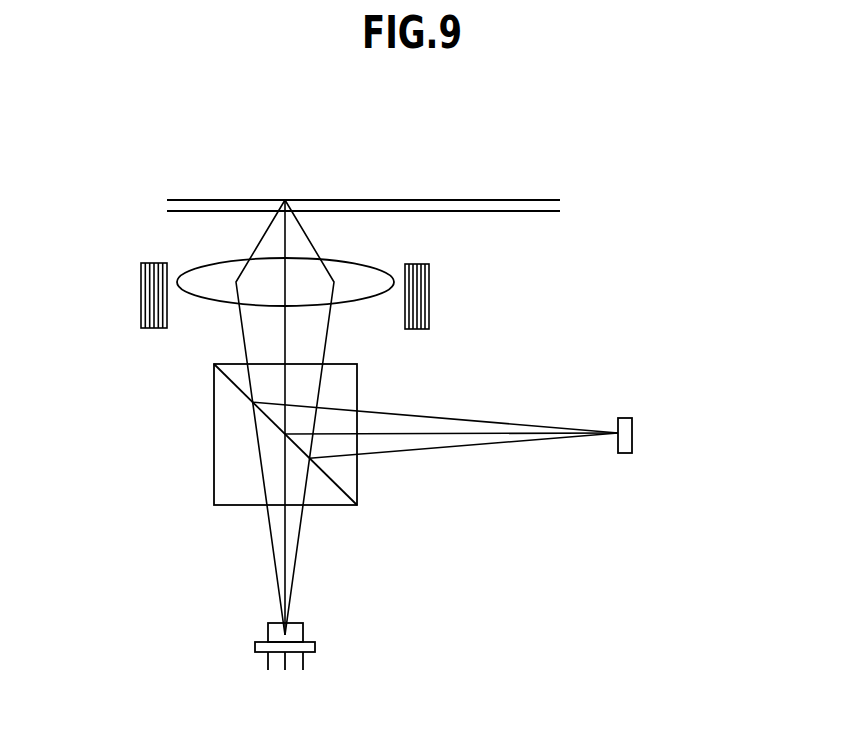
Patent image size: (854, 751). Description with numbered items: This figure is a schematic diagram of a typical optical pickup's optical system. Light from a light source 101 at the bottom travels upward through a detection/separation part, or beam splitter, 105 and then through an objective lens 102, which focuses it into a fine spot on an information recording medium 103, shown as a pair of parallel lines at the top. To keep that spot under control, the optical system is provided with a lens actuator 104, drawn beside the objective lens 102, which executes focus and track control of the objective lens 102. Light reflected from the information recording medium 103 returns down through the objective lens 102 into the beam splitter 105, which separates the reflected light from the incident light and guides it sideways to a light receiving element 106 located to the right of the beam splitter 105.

The light source 101 is at (303, 628).
The objective lens 102 is at (195, 268).
The information recording medium 103 is at (498, 200).
The lens actuator 104 is at (430, 292).
The detection/separation part (beam splitter) 105 is at (214, 441).
The light receiving element 106 is at (632, 432).